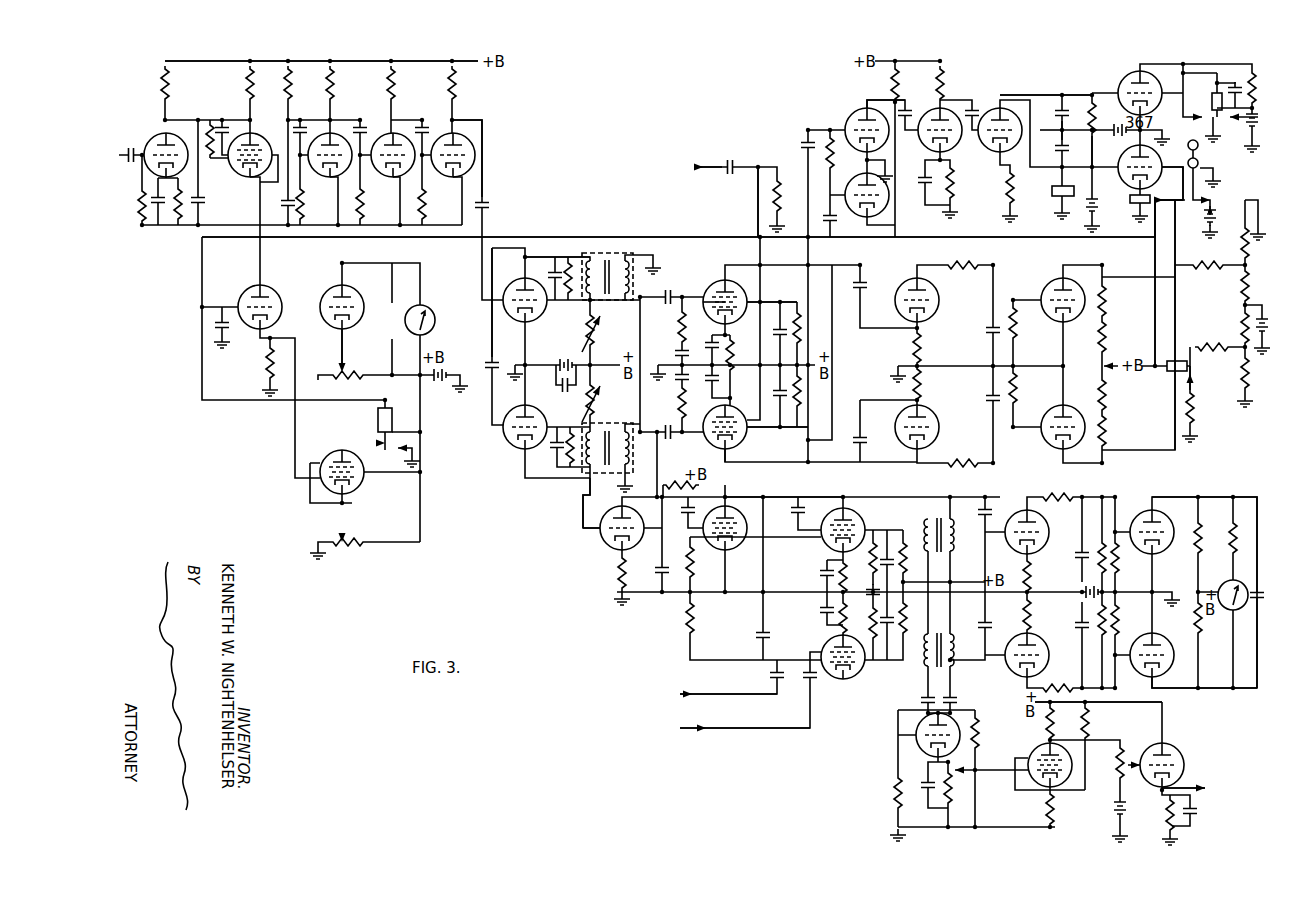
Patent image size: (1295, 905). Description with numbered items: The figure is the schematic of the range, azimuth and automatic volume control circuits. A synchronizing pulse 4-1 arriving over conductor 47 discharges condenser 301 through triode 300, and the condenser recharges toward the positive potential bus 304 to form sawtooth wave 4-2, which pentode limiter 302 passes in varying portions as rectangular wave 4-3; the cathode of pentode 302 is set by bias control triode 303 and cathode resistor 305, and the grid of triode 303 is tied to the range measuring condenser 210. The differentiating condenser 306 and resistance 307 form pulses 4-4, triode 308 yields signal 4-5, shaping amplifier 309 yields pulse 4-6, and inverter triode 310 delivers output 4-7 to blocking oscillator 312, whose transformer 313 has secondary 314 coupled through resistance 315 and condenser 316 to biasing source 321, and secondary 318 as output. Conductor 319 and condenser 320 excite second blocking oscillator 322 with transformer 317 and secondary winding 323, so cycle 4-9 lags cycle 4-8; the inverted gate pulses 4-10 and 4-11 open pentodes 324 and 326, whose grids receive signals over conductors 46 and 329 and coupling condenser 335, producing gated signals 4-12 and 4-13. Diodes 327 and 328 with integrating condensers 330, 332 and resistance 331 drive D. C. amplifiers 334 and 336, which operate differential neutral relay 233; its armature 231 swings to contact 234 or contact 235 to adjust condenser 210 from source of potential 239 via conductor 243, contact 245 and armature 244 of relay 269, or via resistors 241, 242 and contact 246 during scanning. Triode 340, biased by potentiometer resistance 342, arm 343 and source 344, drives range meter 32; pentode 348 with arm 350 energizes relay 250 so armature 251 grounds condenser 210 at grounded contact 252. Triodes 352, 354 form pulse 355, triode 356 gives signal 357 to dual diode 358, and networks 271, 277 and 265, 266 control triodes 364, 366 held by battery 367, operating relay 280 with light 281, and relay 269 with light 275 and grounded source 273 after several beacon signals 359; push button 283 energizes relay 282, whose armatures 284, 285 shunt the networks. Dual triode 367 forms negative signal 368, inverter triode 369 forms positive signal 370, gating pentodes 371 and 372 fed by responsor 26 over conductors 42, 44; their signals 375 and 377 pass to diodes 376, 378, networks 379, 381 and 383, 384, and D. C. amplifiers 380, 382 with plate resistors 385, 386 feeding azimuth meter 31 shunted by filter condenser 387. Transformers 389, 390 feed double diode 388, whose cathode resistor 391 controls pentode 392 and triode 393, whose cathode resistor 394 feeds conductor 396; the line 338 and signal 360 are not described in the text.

The positive potential bus 304 is at (166, 61).
The synchronizing pulse 4-1 is at (136, 92).
The triode 300 is at (160, 134).
The conductor 47 is at (132, 162).
The pentode limiter 302 is at (246, 178).
The condenser 301 is at (204, 204).
The sawtooth wave 4-2 is at (202, 104).
The rectangular wave 4-3 is at (268, 80).
The positive and negative pulses 4-4 is at (306, 80).
The inverted signal 4-5 is at (342, 90).
The differentiating condenser 306 is at (307, 120).
The differentiating resistance 307 is at (304, 206).
The normally conductive triode 308 is at (337, 177).
The shaping amplifier 309 is at (399, 177).
The rectangular pulse 4-6 is at (424, 116).
The inverter triode 310 is at (460, 177).
The inverter output 4-7 is at (485, 118).
The bias control triode 303 is at (256, 283).
The triode 340 is at (329, 283).
The range meter 32 is at (432, 310).
The range measuring condenser 210 is at (214, 324).
The cathode resistor 305 is at (268, 365).
The potentiometer arm 343 is at (342, 360).
The adjustable potentiometer resistance 342 is at (344, 378).
The source of potential 344 is at (426, 384).
The relay 250 is at (378, 416).
The grounded contact 252 is at (416, 441).
The armature 251 is at (380, 470).
The pentode 348 is at (362, 486).
The potentiometer arm 350 is at (360, 536).
The blocking oscillator 312 is at (539, 314).
The second blocking oscillator 322 is at (520, 447).
The condenser 316 is at (558, 268).
The resistance 315 is at (574, 302).
The secondary 314 is at (596, 256).
The secondary 318 is at (632, 254).
The three-winding iron-core transformer 313 is at (640, 282).
The conductor 319 is at (492, 325).
The condenser 320 is at (490, 360).
The biasing source 321 is at (562, 362).
The secondary winding 323 is at (622, 428).
The transformer 317 is at (580, 474).
The asymmetric cycle 4-8 is at (566, 252).
The oscillatory cycle 4-9 is at (542, 500).
The pentode 324 is at (720, 280).
The pentode 326 is at (748, 432).
The time-discriminating and gate pulse 4-10 is at (689, 270).
The gated signal 4-12 is at (790, 272).
The time-discriminating and gate pulse 4-11 is at (670, 454).
The gated signal 4-13 is at (760, 442).
The conductor 46 is at (694, 166).
The coupling condenser 335 is at (738, 162).
The conductor 329 is at (758, 210).
The conductor 338 is at (964, 237).
The diode 327 is at (905, 279).
The diode 328 is at (909, 454).
The D. C. amplifier 334 is at (1055, 279).
The D. C. amplifier 336 is at (1056, 447).
The integrating condenser 330 is at (988, 335).
The integrating condenser 332 is at (986, 397).
The integrating resistance 331 is at (1022, 380).
The conductor 243 is at (1149, 260).
The contact 246 is at (1171, 325).
The resistor 242 is at (1227, 272).
The resistor 241 is at (1242, 294).
The contact 235 is at (1184, 347).
The differential neutral relay 233 is at (1170, 376).
The armature 231 is at (1194, 375).
The contact 234 is at (1198, 403).
The source of potential 239 is at (1264, 394).
The triode 352 is at (849, 116).
The triode 354 is at (892, 214).
The positive voltage pulse 355 is at (853, 100).
The triode 356 is at (955, 162).
The negative signal 357 is at (962, 82).
The dual diode 358 is at (1016, 162).
The conductor 360 is at (1035, 88).
The integrating network element 271 is at (1103, 104).
The integrating network element 277 is at (1074, 107).
The armature 284 is at (1062, 122).
The armature 285 is at (1056, 130).
The integrating network element 265 is at (1074, 142).
The integrating network element 266 is at (1092, 162).
The beacon signals 359 is at (1118, 66).
The triode 364 is at (1162, 102).
The triode 366 is at (1167, 129).
The relay 280 is at (1222, 111).
The light 281 is at (1199, 147).
The grounded light 275 is at (1198, 163).
The relay 282 is at (1060, 200).
The push button 283 is at (1094, 184).
The armature 244 is at (1179, 183).
The contact 245 is at (1176, 200).
The relay 269 is at (1130, 210).
The grounded source of potential 273 is at (1214, 226).
The dual triode 367 is at (612, 545).
The inverter triode 369 is at (725, 551).
The negative signal 368 is at (694, 524).
The positive signal 370 is at (765, 489).
The pentode 371 is at (840, 506).
The pentode 372 is at (828, 678).
The transformer 389 is at (926, 518).
The transformer 390 is at (922, 668).
The conductor 42 is at (684, 694).
The conductor 44 is at (684, 728).
The selected beacon signal 375 is at (995, 485).
The diode 376 is at (1042, 519).
The integrating network element 379 is at (1080, 556).
The integrating network element 381 is at (1082, 570).
The integrating network element 383 is at (1080, 618).
The integrating network element 384 is at (1086, 632).
The diode 378 is at (1042, 668).
The D. C. amplifier 380 is at (1132, 498).
The D. C. amplifier 382 is at (1150, 630).
The plate resistor 385 is at (1202, 492).
The azimuth meter 31 is at (1228, 578).
The filter condenser 387 is at (1240, 610).
The plate resistor 386 is at (1204, 682).
The double diode 388 is at (916, 739).
The cathode resistor 391 is at (958, 795).
The pentode 392 is at (1060, 787).
The selected beacon signal 377 is at (1034, 700).
The triode 393 is at (1163, 742).
The cathode resistor 394 is at (1124, 802).
The conductor 396 is at (1185, 784).
The responsor 26 is at (1227, 804).